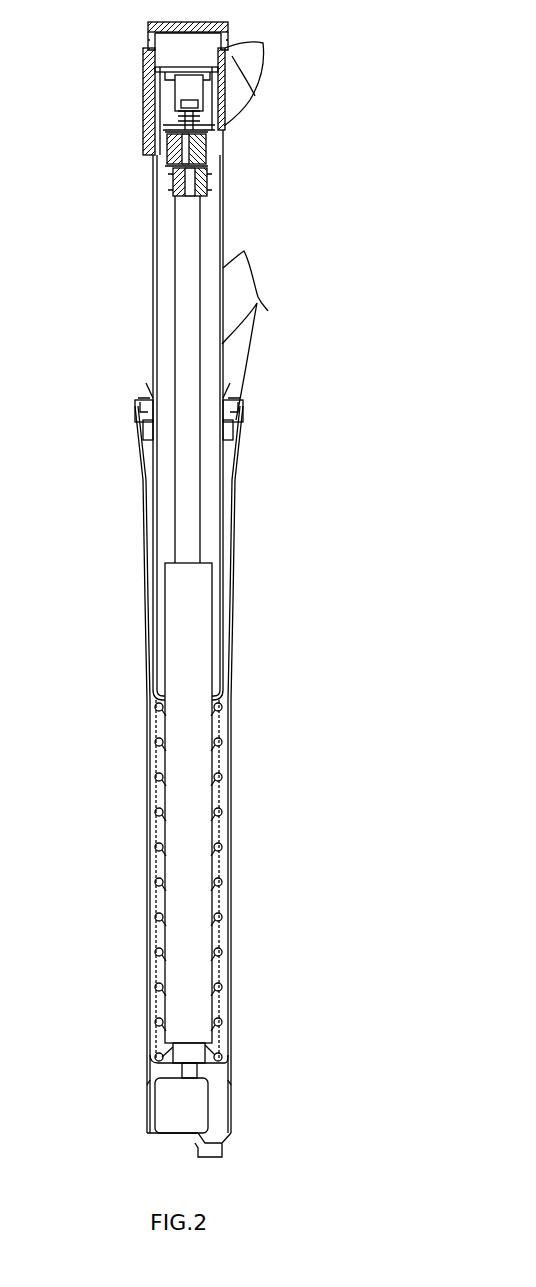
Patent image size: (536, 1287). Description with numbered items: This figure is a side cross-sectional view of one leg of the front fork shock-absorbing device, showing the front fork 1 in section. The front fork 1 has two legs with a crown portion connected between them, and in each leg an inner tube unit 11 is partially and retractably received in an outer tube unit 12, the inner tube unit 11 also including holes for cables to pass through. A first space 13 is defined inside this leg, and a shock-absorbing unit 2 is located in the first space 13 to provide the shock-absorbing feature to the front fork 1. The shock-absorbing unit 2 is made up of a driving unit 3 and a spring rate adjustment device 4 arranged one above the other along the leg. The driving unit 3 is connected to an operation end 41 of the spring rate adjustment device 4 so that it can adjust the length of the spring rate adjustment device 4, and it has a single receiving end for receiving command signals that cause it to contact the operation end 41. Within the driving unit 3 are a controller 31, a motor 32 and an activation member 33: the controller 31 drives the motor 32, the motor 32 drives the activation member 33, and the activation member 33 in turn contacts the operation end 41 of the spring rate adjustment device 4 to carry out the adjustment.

The front fork 1 is at (348, 448).
The shock-absorbing unit 2 is at (97, 255).
The driving unit 3 is at (155, 178).
The spring rate adjustment device 4 is at (176, 297).
The inner tube unit 11 is at (221, 345).
The outer tube unit 12 is at (227, 495).
The first space 13 is at (157, 935).
The controller 31 is at (177, 65).
The motor 32 is at (150, 97).
The activation member 33 is at (210, 147).
The operation end 41 is at (220, 178).